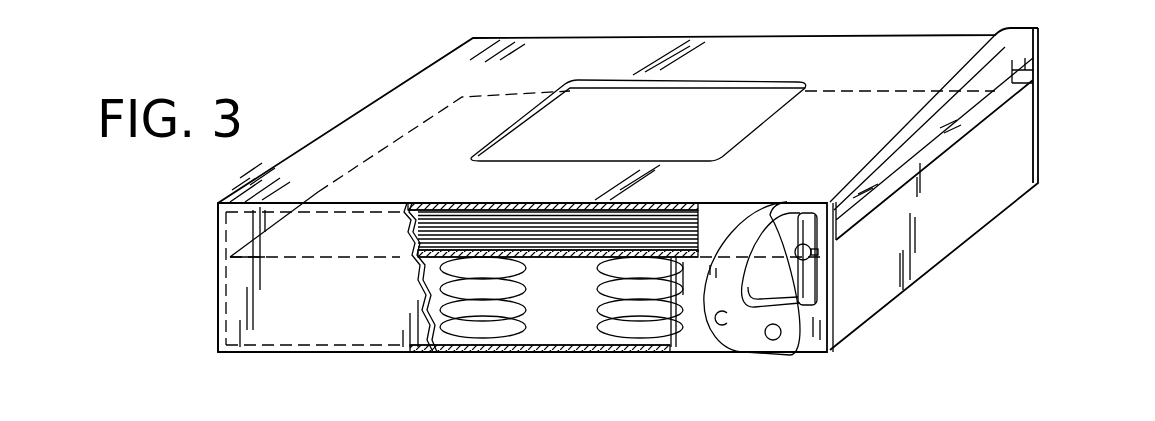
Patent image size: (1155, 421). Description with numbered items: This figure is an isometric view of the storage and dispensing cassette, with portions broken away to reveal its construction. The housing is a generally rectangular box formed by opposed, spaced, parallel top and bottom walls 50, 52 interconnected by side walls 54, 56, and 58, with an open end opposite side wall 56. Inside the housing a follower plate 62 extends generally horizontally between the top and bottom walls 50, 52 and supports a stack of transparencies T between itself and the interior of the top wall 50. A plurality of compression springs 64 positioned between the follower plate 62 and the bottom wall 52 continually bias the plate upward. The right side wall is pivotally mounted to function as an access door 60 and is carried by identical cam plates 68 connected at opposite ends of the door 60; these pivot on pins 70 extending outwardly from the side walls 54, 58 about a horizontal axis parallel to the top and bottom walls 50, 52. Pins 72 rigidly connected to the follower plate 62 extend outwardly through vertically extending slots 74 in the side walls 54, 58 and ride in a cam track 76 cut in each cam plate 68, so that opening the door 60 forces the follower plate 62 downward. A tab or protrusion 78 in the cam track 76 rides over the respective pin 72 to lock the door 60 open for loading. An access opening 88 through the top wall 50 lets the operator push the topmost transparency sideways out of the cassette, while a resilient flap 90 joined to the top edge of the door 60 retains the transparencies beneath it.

The top wall 50 is at (470, 201).
The bottom wall 52 is at (573, 350).
The side wall 54 is at (305, 335).
The side wall 56 is at (217, 300).
The side wall 58 is at (992, 82).
The access door 60 is at (838, 307).
The follower plate 62 is at (588, 257).
The compression springs 64 is at (500, 333).
The cam plates 68 is at (807, 333).
The pins 70 is at (773, 340).
The pins 72 is at (813, 257).
The slots 74 is at (813, 228).
The cam track 76 is at (770, 237).
The tab or protrusion 78 is at (797, 345).
The access opening 88 is at (757, 81).
The resilient flap 90 is at (927, 138).
The transparencies T is at (588, 222).